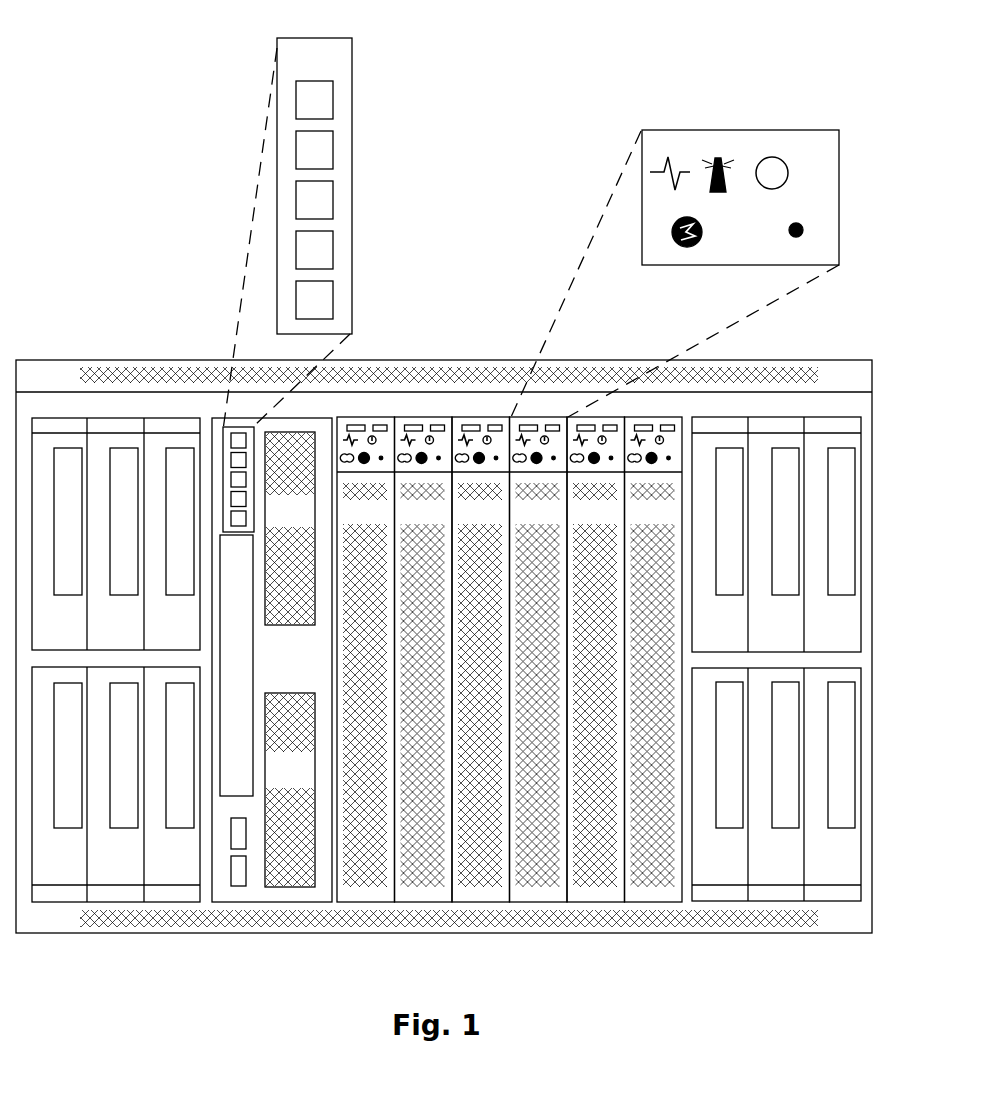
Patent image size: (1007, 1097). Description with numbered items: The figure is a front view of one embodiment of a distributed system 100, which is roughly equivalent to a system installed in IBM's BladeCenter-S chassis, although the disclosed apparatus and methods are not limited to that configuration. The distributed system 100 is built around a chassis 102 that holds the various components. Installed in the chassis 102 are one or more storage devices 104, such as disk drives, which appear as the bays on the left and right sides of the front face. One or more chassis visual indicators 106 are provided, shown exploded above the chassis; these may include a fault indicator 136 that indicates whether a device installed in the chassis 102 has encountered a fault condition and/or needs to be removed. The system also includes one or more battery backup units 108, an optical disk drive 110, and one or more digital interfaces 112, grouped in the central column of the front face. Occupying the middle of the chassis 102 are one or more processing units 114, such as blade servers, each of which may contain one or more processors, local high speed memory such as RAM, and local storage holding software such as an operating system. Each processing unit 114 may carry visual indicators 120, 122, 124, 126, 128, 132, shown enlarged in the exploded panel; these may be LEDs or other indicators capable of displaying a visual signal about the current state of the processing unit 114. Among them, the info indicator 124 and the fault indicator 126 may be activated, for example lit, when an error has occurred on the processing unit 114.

The distributed system 100 is at (122, 178).
The chassis 102 is at (69, 414).
The storage devices 104 is at (78, 640).
The chassis visual indicators 106 is at (332, 72).
The battery backup units 108 is at (308, 522).
The optical disk drive 110 is at (247, 637).
The digital interfaces 112 is at (246, 832).
The processing units 114 is at (383, 520).
The visual indicator 120 is at (650, 172).
The visual indicator 122 is at (713, 158).
The info indicator 124 is at (776, 157).
The fault indicator 126 is at (818, 166).
The visual indicator 128 is at (680, 232).
The visual indicator 132 is at (803, 230).
The fault indicator 136 is at (333, 298).